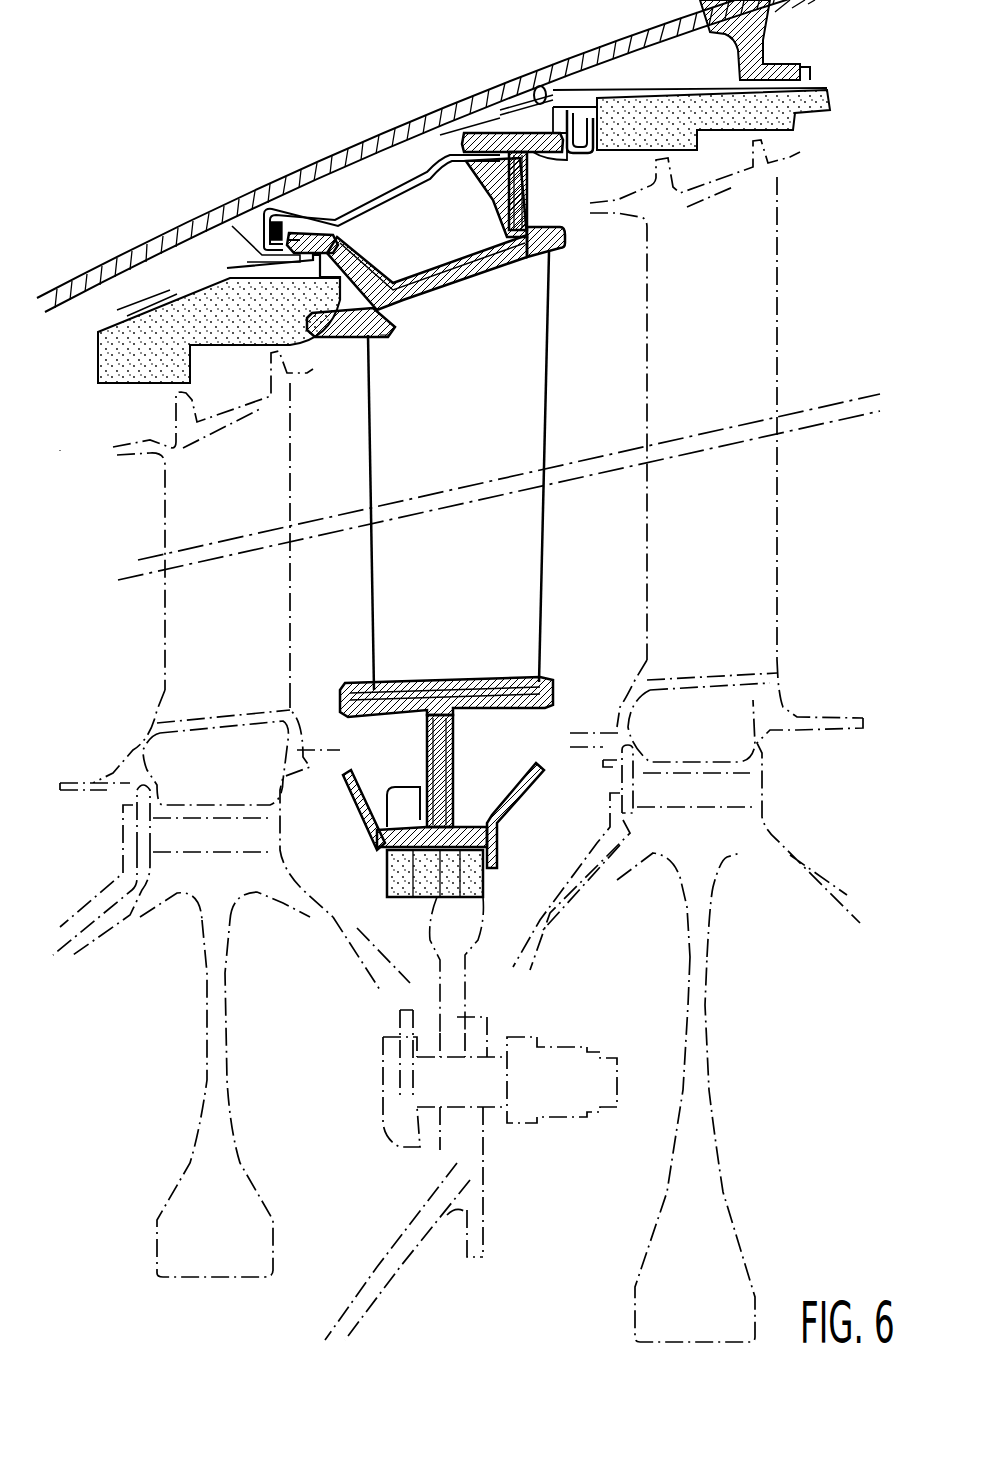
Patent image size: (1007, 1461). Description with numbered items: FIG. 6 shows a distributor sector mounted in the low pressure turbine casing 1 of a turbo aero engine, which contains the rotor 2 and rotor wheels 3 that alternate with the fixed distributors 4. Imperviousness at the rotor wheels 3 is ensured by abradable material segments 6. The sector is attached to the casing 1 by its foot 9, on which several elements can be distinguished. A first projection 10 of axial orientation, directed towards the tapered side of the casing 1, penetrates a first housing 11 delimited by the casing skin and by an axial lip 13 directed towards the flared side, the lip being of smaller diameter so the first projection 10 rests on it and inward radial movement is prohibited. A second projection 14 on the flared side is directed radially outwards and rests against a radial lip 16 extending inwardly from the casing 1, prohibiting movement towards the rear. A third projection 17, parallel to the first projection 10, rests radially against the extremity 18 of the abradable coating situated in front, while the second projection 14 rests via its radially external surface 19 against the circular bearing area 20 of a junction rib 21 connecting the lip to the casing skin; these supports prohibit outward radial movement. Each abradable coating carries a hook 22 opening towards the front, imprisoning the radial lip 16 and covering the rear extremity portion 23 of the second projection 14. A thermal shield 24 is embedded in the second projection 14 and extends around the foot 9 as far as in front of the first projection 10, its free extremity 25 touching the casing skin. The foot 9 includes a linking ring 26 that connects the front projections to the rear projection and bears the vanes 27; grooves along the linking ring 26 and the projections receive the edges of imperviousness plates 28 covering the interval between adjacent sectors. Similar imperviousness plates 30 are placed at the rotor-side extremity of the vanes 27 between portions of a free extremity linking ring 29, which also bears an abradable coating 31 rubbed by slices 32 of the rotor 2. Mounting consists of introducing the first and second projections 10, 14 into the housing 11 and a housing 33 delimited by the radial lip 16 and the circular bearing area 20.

The low pressure turbine casing 1 is at (90, 277).
The rotor 2 is at (498, 1160).
The rotor wheels 3 is at (782, 335).
The distributor 4 is at (547, 522).
The abradable material segments 6 is at (69, 433).
The foot 9 is at (390, 332).
The first projection 10 is at (303, 230).
The first housing 11 is at (287, 205).
The axial lip 13 is at (212, 272).
The second projection 14 is at (545, 160).
The radial lip 16 is at (572, 130).
The third projection 17 is at (340, 345).
The extremity of the abradable coating 18 is at (273, 340).
The radially external surface 19 is at (447, 120).
The circular bearing area 20 is at (540, 86).
The junction rib 21 is at (510, 100).
The hook 22 is at (598, 123).
The rear extremity portion 23 is at (567, 160).
The thermal shield 24 is at (397, 182).
The free extremity 25 is at (262, 223).
The linking ring 26 is at (447, 262).
The vanes 27 is at (480, 566).
The imperviousness plates 28 is at (480, 262).
The free extremity linking ring 29 is at (420, 737).
The imperviousness plates 30 is at (478, 710).
The abradable coating 31 is at (410, 878).
The slices 32 is at (455, 897).
The housing 33 is at (533, 163).